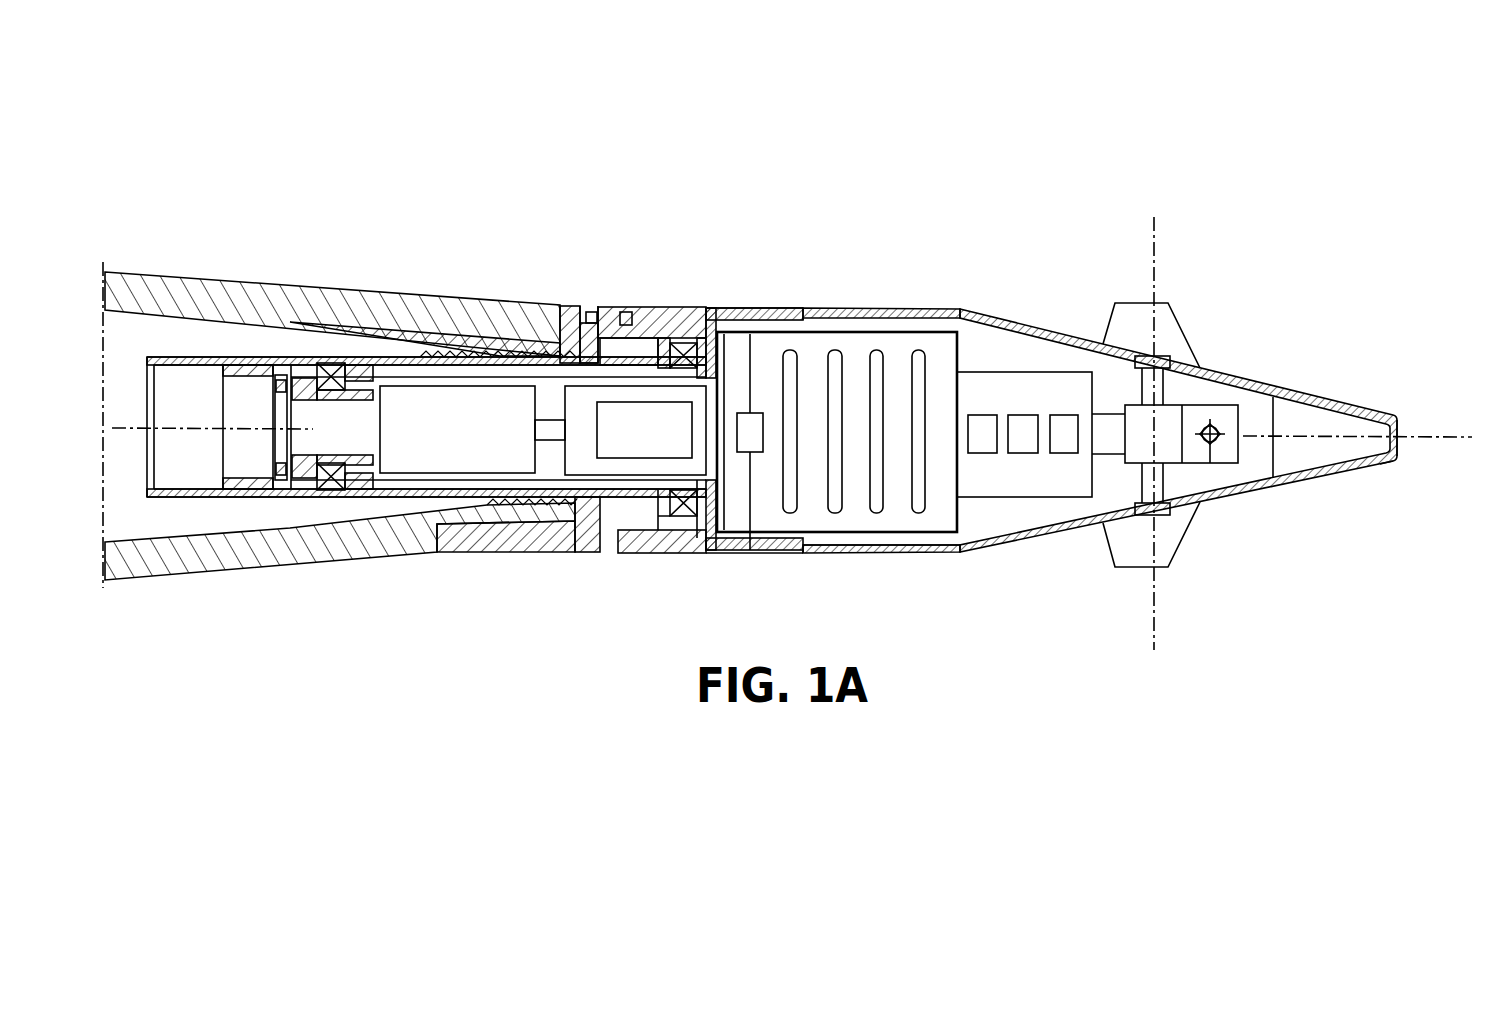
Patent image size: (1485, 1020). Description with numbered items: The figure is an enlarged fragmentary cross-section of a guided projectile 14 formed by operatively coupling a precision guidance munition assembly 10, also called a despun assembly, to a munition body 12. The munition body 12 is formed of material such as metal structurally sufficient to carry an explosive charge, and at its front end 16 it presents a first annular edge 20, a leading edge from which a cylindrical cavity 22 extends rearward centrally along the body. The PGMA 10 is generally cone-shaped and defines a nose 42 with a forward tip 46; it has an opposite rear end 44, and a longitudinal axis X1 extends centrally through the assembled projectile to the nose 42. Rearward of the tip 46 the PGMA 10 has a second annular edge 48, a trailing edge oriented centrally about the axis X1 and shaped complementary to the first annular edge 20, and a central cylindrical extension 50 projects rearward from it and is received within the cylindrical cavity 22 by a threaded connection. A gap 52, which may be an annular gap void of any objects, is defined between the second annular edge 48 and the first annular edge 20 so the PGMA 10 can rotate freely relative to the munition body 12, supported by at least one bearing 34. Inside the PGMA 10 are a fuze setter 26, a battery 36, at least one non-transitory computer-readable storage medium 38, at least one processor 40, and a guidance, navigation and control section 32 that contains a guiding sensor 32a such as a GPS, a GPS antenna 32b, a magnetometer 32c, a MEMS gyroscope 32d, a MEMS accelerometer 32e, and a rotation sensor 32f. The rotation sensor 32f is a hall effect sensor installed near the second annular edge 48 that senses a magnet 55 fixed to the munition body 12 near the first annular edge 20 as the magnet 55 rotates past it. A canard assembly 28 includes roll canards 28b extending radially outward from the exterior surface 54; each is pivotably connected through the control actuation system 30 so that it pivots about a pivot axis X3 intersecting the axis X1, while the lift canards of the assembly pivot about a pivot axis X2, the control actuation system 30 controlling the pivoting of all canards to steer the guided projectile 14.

The precision guidance munition assembly 10 is at (952, 305).
The munition body 12 is at (200, 272).
The guided projectile 14 is at (1068, 95).
The front end 16 is at (418, 300).
The first annular edge 20 is at (590, 358).
The cylindrical cavity 22 is at (255, 345).
The fuze setter 26 is at (1335, 398).
The canard assembly 28 is at (1182, 298).
The roll canard 28b is at (1117, 318).
The control actuation system 30 is at (1207, 400).
The guidance, navigation and control section 32 is at (858, 345).
The guiding sensor 32a is at (765, 410).
The GPS antenna 32b is at (730, 308).
The magnetometer 32c is at (982, 415).
The MEMS gyroscope 32d is at (1022, 455).
The MEMS accelerometer 32e is at (1062, 455).
The rotation sensor 32f is at (625, 312).
The bearing 34 is at (333, 362).
The battery 36 is at (472, 429).
The non-transitory computer-readable storage medium 38 is at (635, 430).
The processor 40 is at (799, 365).
The nose 42 is at (1412, 455).
The rear end 44 is at (128, 492).
The forward tip 46 is at (1398, 418).
The second annular edge 48 is at (610, 553).
The central cylindrical extension 50 is at (298, 510).
The gap 52 is at (591, 311).
The exterior surface 54 is at (925, 553).
The magnet 55 is at (589, 312).
The longitudinal axis X1 is at (1446, 437).
The pivot axis X2 is at (1222, 450).
The pivot axis X3 is at (1152, 233).